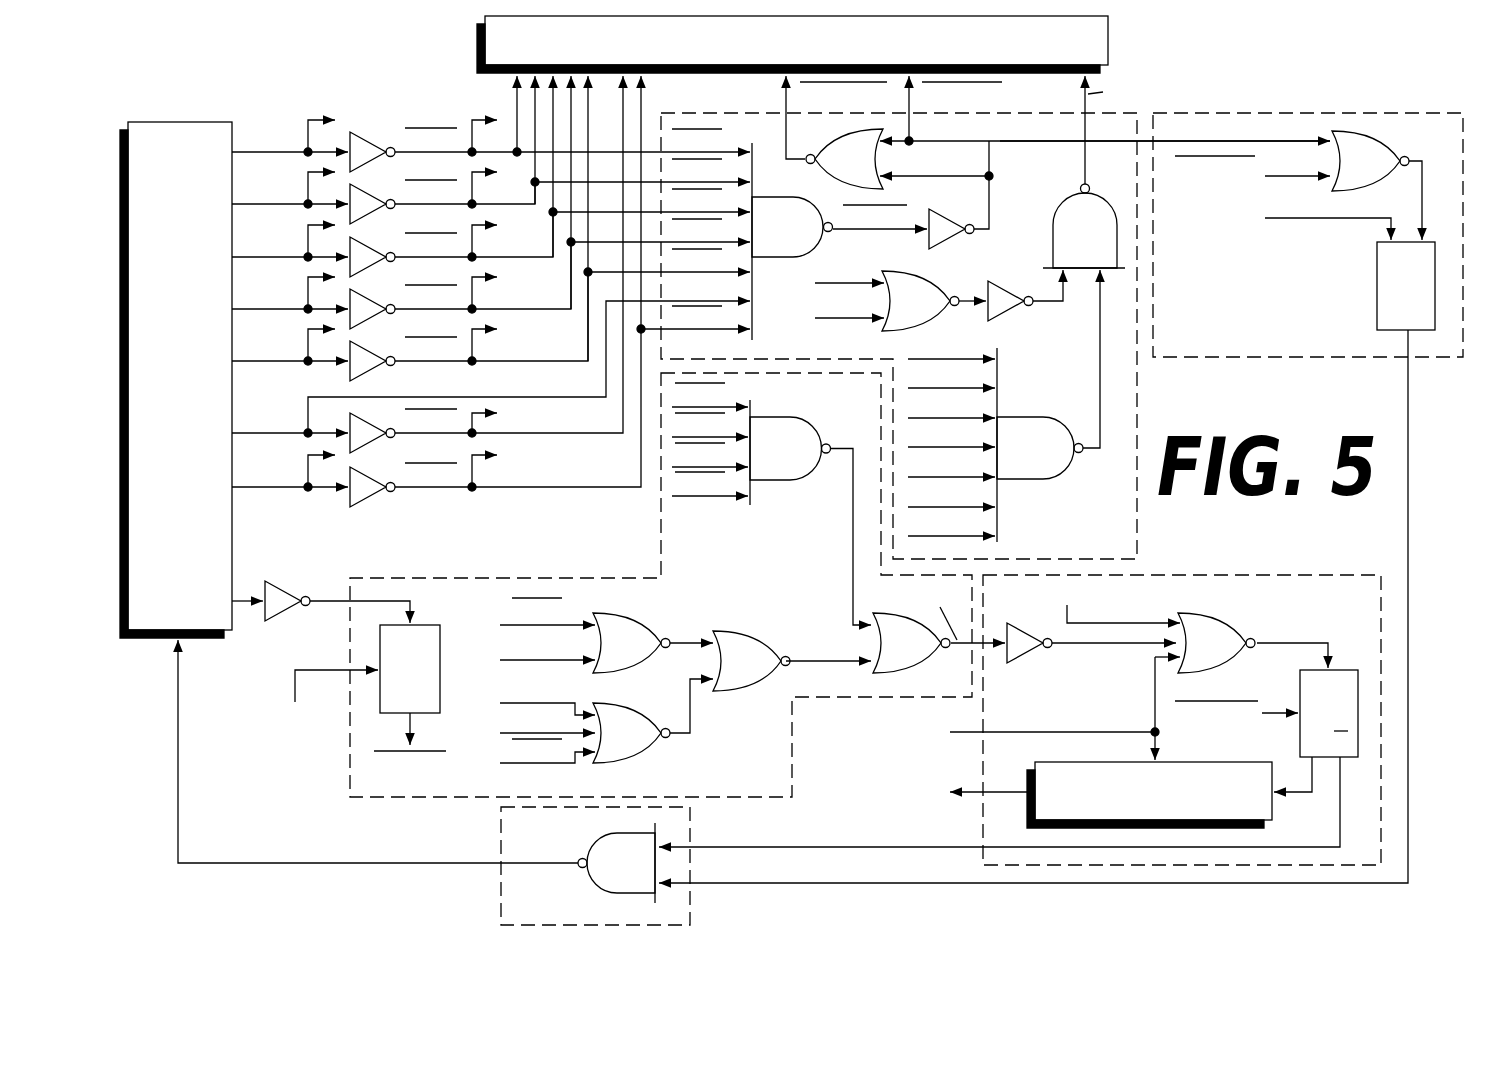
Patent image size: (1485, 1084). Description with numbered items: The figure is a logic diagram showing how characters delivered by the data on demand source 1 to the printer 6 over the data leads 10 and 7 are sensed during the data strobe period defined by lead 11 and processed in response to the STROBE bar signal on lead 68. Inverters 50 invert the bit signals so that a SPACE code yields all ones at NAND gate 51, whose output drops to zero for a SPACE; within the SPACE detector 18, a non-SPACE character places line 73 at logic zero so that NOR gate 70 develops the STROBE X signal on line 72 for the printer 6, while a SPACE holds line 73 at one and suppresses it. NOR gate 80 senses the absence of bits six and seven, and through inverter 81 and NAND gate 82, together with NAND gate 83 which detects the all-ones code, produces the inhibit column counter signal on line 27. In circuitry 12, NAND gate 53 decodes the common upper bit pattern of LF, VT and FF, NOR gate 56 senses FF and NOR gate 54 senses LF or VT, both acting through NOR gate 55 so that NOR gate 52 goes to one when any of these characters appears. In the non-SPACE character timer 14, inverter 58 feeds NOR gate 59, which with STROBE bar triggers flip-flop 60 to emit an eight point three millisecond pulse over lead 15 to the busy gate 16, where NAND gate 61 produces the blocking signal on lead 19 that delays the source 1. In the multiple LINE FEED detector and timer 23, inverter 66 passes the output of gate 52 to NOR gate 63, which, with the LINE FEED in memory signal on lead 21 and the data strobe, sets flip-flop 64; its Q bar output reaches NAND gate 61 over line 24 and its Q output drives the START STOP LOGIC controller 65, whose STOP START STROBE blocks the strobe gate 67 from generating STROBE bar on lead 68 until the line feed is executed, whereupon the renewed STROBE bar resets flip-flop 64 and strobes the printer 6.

The data on demand source 1 is at (180, 122).
The printer 6 is at (1108, 54).
The lead 7 is at (668, 90).
The lead 10 is at (308, 120).
The lead 11 is at (330, 599).
The circuitry 12 is at (460, 797).
The non-SPACE character timer 14 is at (1265, 357).
The lead 15 is at (740, 883).
The busy gate 16 is at (501, 887).
The SPACE detector 18 is at (1137, 392).
The lead 19 is at (308, 863).
The lead 21 is at (1058, 732).
The multiple LINE FEED detector and timer 23 is at (1175, 575).
The line 24 is at (740, 847).
The line 27 is at (1240, 94).
The inverters 50 is at (365, 120).
The NAND gate 51 is at (768, 257).
The NOR gate 52 is at (914, 668).
The NAND gate 53 is at (813, 426).
The NOR gate 54 is at (645, 625).
The NOR gate 55 is at (750, 636).
The NOR gate 56 is at (645, 752).
The inverter 58 is at (946, 216).
The NOR gate 59 is at (1388, 150).
The flip-flop 60 is at (1377, 288).
The NAND gate 61 is at (580, 851).
The NOR gate 63 is at (1230, 628).
The flip-flop 64 is at (1342, 670).
The START STOP LOGIC controller 65 is at (1278, 818).
The inverter 66 is at (1028, 653).
The gate 67 is at (418, 625).
The lead 68 is at (1290, 177).
The NOR gate 70 is at (884, 160).
The line 72 is at (790, 141).
The line 73 is at (1131, 142).
The NOR gate 80 is at (932, 285).
The inverter 81 is at (996, 286).
The NAND gate 82 is at (1056, 216).
The NAND gate 83 is at (1032, 417).